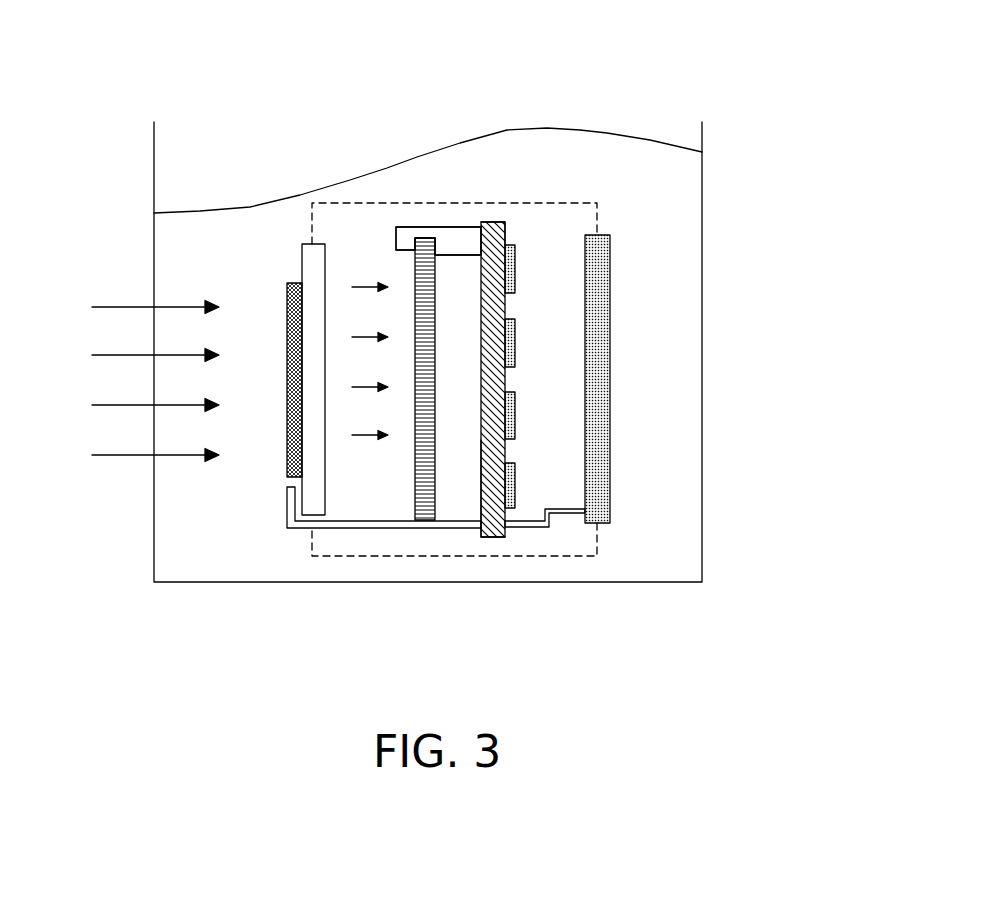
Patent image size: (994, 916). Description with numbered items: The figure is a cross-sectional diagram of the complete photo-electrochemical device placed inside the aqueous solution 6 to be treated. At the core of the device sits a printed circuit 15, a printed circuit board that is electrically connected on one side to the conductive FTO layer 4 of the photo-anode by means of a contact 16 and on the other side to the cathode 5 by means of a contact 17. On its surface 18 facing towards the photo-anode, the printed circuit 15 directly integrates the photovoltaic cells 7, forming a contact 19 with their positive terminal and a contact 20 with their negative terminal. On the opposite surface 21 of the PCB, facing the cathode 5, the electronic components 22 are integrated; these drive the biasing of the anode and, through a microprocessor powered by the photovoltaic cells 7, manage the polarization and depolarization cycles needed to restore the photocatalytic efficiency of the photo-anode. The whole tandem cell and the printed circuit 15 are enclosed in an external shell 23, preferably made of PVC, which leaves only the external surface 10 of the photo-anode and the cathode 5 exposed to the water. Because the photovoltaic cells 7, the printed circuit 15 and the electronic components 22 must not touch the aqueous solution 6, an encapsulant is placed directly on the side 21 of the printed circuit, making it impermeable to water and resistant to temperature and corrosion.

The conductive FTO layer 4 is at (302, 271).
The cathode 5 is at (597, 359).
The aqueous solution 6 is at (185, 553).
The photovoltaic cells 7 is at (417, 490).
The external surface of the photo-anode 10 is at (302, 258).
The printed circuit 15 is at (497, 222).
The contact 16 is at (296, 528).
The contact 17 is at (567, 511).
The surface of the printed circuit facing the photo-anode 18 is at (481, 457).
The contact to positive terminal of photovoltaic cells 19 is at (410, 227).
The contact to negative terminal of photovoltaic cells 20 is at (458, 255).
The surface of the PCB facing the cathode 21 is at (505, 232).
The electronic components 22 is at (517, 262).
The external shell 23 is at (597, 527).